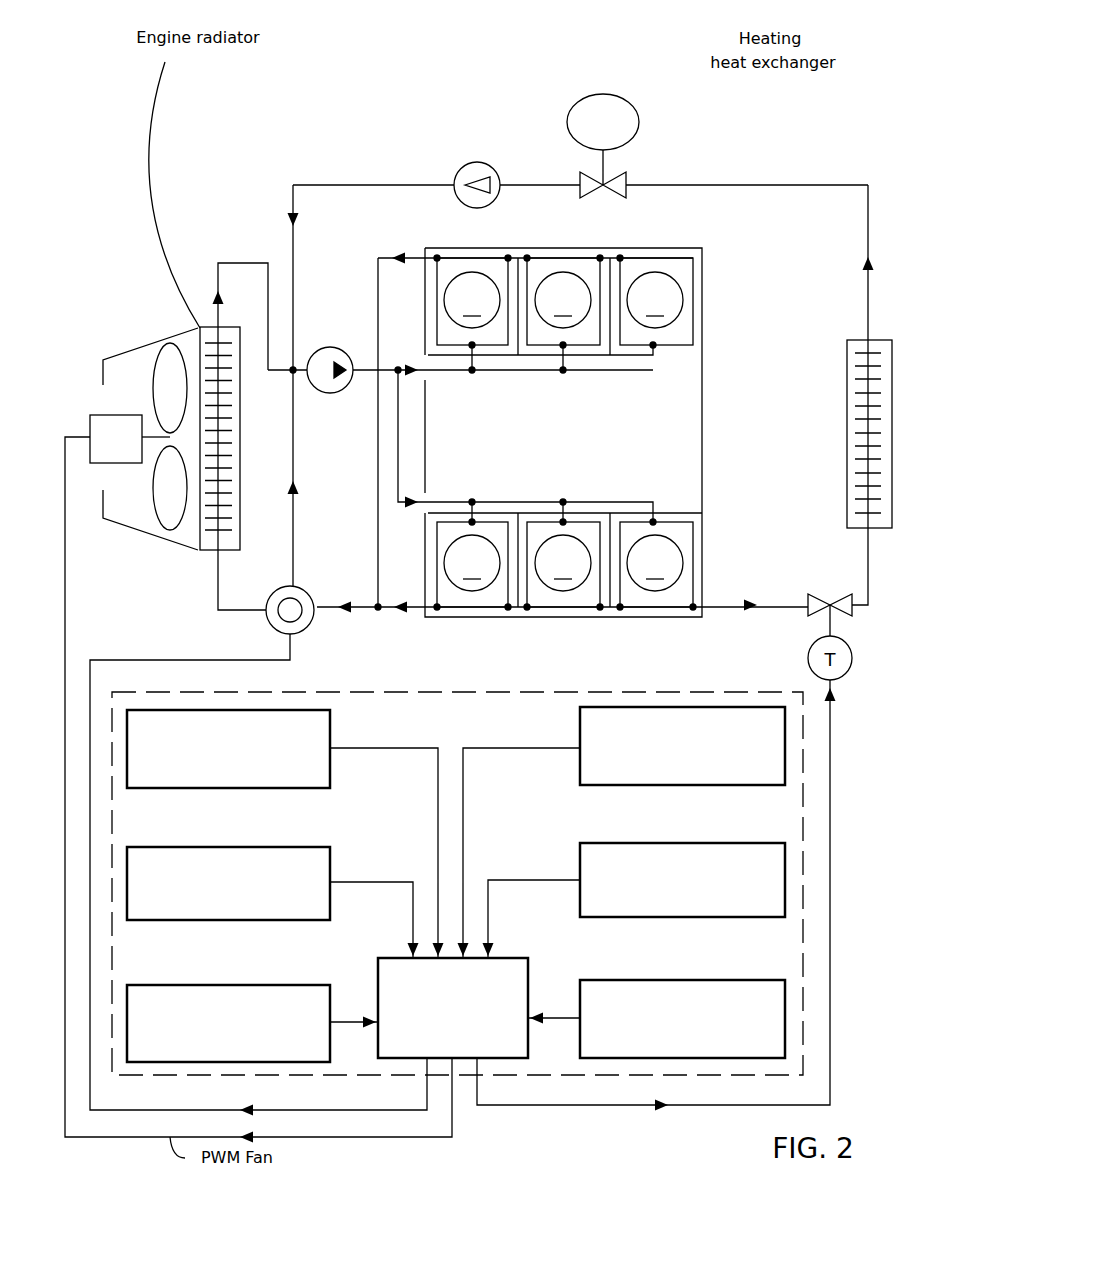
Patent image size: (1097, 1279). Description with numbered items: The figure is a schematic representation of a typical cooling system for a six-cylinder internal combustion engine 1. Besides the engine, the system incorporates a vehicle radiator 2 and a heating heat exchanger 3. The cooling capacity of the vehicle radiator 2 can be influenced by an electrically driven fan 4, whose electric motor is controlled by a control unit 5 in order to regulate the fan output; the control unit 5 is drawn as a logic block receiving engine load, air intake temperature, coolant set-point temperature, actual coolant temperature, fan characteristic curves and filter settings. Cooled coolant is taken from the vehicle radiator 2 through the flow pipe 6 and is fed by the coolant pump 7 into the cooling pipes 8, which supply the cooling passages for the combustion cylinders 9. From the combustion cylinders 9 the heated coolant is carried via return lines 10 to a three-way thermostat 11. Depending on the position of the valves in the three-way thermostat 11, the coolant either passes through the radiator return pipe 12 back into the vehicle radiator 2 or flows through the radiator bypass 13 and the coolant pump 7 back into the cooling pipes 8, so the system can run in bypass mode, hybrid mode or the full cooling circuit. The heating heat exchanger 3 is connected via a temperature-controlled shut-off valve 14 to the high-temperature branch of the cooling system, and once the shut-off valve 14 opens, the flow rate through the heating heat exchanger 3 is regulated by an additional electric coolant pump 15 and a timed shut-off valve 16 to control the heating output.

The internal combustion engine 1 is at (705, 290).
The vehicle radiator 2 is at (232, 552).
The heating heat exchanger 3 is at (880, 335).
The electrically driven fan 4 is at (98, 410).
The control unit 5 is at (810, 890).
The flow pipe 6 is at (236, 263).
The coolant pump 7 is at (334, 343).
The cooling pipes 8 is at (540, 375).
The combustion cylinders 9 is at (563, 431).
The return lines 10 is at (378, 516).
The three-way thermostat 11 is at (308, 592).
The radiator return pipe 12 is at (218, 598).
The radiator bypass 13 is at (300, 466).
The temperature-controlled shut-off valve 14 is at (827, 595).
The additional electric coolant pump 15 is at (470, 162).
The timed shut-off valve 16 is at (640, 122).